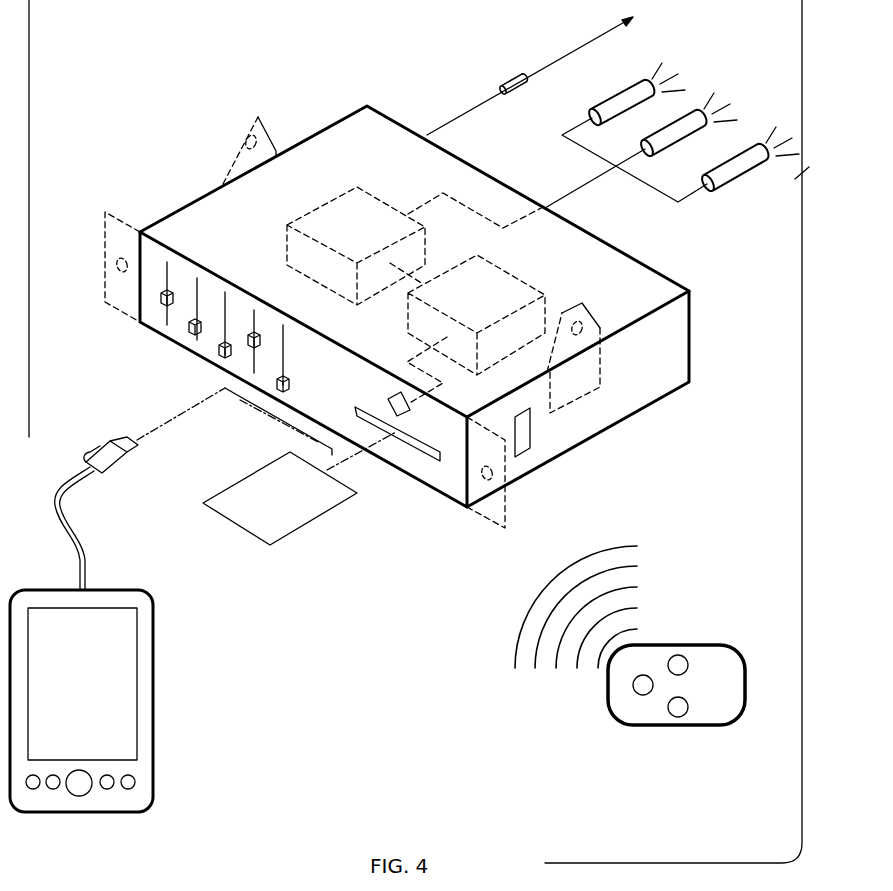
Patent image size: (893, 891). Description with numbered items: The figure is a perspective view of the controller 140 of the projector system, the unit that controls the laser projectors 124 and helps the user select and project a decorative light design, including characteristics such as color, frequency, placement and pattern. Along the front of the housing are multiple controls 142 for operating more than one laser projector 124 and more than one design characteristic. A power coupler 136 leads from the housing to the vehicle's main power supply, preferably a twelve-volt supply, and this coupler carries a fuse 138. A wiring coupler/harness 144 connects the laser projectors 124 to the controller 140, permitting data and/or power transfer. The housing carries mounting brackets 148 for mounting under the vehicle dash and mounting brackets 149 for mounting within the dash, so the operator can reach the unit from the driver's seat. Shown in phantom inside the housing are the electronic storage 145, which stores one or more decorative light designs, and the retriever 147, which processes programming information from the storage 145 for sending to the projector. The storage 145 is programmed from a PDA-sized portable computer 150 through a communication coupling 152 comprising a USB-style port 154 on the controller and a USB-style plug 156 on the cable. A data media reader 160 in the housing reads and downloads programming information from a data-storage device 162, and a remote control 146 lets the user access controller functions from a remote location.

The laser projector 124 is at (620, 97).
The power coupler 136 is at (458, 114).
The fuse 138 is at (515, 77).
The controller 140 is at (367, 102).
The controls 142 is at (225, 357).
The wiring coupler/harness 144 is at (678, 203).
The electronic storage 145 is at (537, 284).
The remote control 146 is at (608, 700).
The retriever 147 is at (362, 200).
The mounting brackets 148 is at (272, 132).
The mounting brackets 149 is at (104, 210).
The portable computer 150 is at (162, 710).
The communication coupling 152 is at (83, 553).
The USB-style port 154 is at (390, 400).
The USB-style plug 156 is at (123, 462).
The data media reader 160 is at (407, 468).
The data-storage device 162 is at (270, 548).